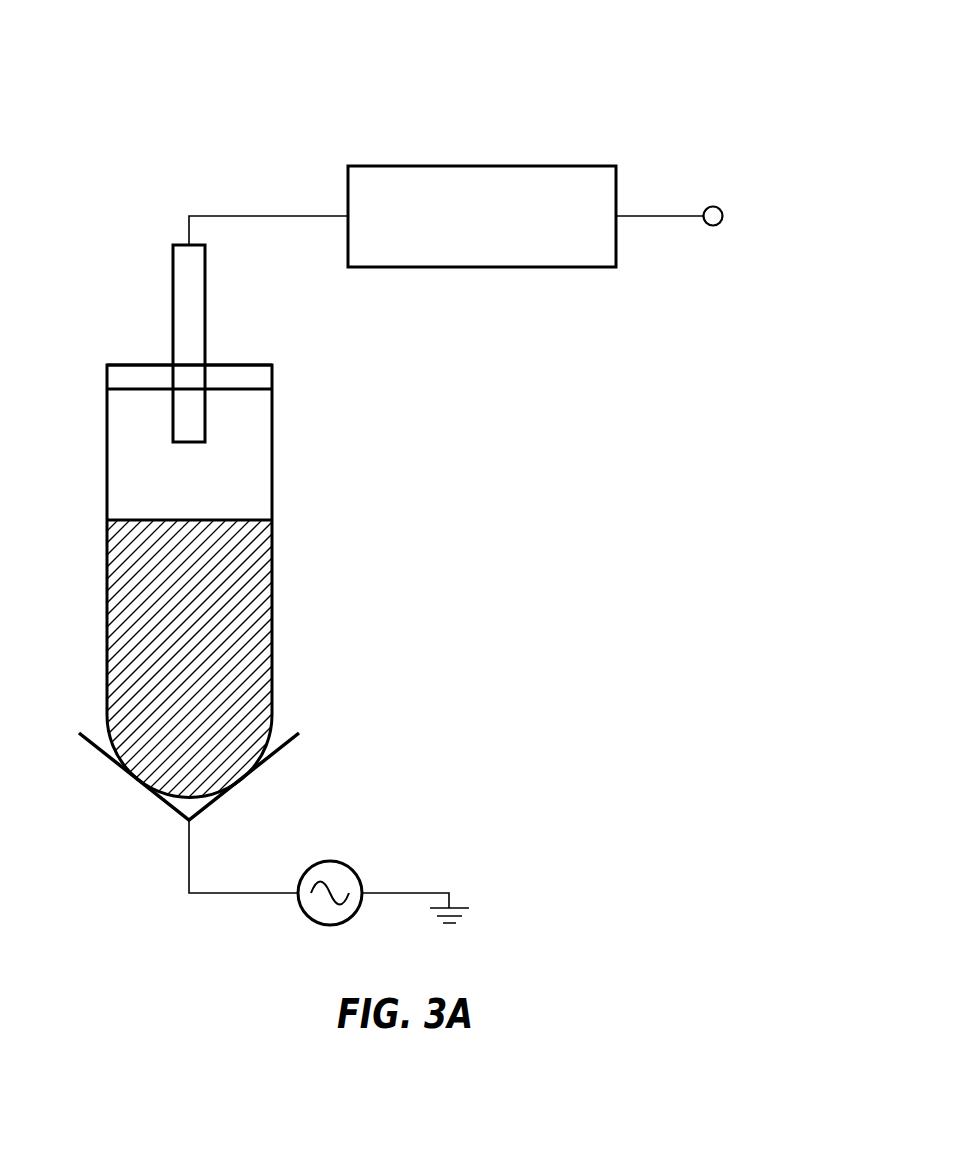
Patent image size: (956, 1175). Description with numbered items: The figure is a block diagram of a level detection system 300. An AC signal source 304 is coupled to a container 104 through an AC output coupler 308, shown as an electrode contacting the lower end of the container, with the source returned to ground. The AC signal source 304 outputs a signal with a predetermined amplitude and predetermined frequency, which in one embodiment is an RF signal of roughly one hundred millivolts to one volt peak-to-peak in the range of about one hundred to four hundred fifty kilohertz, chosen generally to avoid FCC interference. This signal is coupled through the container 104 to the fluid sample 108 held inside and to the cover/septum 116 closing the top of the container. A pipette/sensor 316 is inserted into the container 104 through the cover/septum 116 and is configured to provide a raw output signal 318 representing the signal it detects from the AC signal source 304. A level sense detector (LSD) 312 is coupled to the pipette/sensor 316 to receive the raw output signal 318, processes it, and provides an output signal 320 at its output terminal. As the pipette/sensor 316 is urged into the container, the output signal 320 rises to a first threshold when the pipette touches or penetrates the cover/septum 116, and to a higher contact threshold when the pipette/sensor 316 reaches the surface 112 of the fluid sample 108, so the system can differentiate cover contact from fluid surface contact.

The level detection system 300 is at (170, 90).
The container 104 is at (107, 643).
The fluid sample 108 is at (213, 638).
The surface of the fluid sample 112 is at (145, 517).
The cover/septum 116 is at (107, 380).
The AC signal source 304 is at (338, 862).
The AC output coupler 308 is at (187, 860).
The level sense detector (LSD) 312 is at (513, 166).
The pipette/sensor 316 is at (173, 289).
The raw output signal 318 is at (268, 216).
The output signal 320 is at (712, 206).